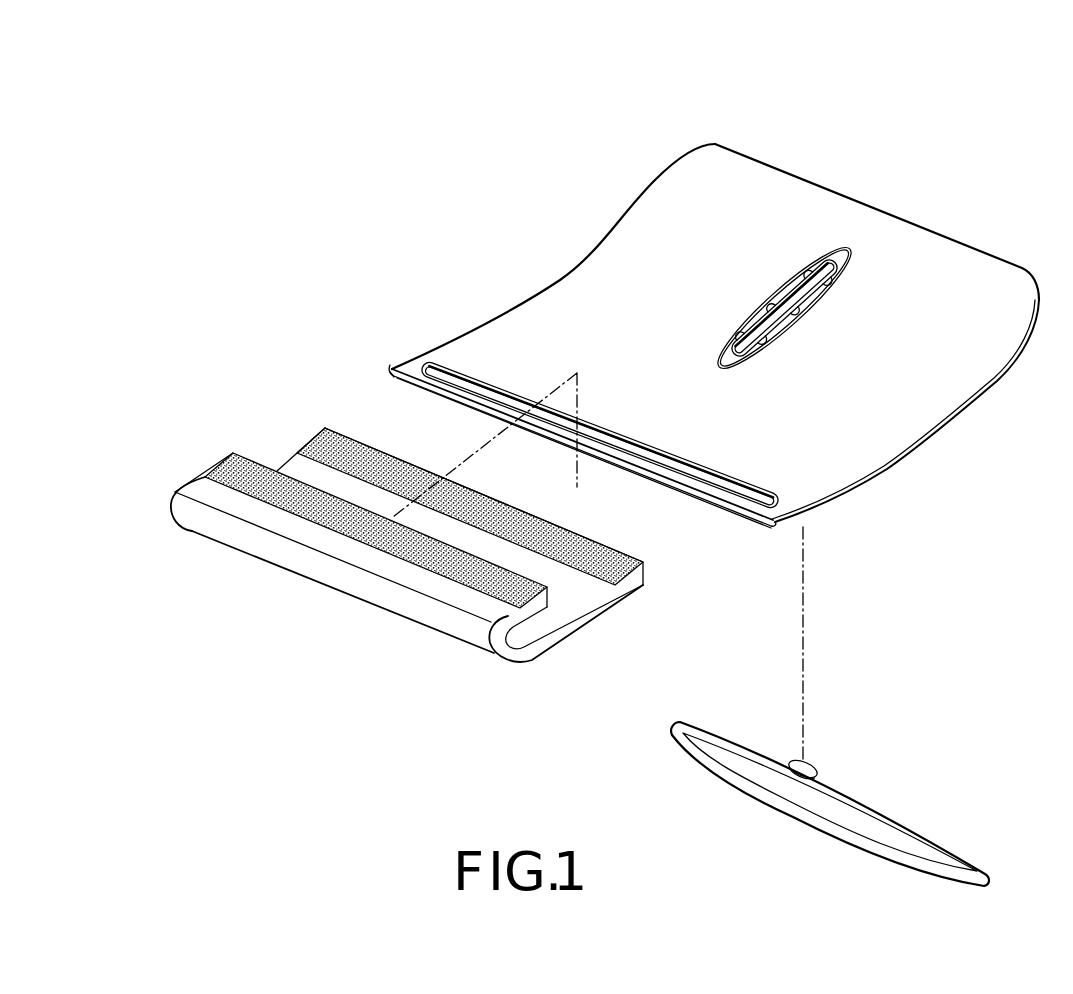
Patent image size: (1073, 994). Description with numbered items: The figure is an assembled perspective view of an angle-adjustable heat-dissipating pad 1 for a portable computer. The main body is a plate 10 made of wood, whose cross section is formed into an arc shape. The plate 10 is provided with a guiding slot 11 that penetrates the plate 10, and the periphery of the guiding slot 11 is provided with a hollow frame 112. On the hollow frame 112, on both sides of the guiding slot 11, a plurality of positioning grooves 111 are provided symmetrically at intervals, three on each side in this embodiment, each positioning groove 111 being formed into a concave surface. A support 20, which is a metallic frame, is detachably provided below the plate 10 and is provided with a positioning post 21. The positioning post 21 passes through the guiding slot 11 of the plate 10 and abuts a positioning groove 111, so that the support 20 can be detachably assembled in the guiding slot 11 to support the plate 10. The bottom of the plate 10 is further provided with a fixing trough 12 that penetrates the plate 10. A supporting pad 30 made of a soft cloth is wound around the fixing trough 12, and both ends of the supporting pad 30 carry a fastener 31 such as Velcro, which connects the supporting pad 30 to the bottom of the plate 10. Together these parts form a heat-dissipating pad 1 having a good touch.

The heat-dissipating pad 1 is at (577, 65).
The plate 10 is at (882, 415).
The guiding slot 11 is at (762, 338).
The positioning groove 111 is at (808, 265).
The hollow frame 112 is at (842, 257).
The fixing trough 12 is at (477, 390).
The support 20 is at (905, 820).
The positioning post 21 is at (807, 767).
The supporting pad 30 is at (453, 632).
The fastener 31 is at (240, 460).